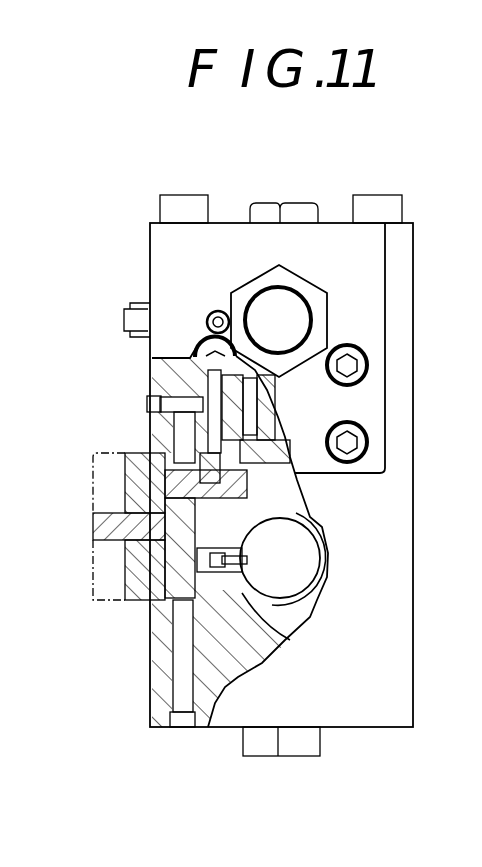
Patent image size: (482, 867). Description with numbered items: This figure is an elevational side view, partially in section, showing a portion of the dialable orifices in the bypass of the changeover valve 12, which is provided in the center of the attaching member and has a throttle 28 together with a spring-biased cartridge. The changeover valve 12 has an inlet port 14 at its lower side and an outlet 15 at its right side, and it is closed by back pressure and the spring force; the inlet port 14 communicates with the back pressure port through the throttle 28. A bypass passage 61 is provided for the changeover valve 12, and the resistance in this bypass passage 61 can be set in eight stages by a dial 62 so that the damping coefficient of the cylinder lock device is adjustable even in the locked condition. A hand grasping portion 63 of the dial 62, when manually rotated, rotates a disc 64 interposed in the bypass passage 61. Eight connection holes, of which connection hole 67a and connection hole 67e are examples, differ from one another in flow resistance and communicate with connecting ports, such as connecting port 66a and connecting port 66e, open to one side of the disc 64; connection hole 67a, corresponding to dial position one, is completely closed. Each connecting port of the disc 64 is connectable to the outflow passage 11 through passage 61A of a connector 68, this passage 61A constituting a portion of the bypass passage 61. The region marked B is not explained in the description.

The outflow passage 11 is at (333, 562).
The changeover valve 12 is at (268, 431).
The inlet port 14 is at (285, 473).
The outlet 15 is at (222, 410).
The throttle 28 is at (285, 500).
The bypass passage 61 is at (152, 428).
The passage 61A is at (278, 647).
The dial 62 is at (90, 476).
The hand grasping portion 63 is at (92, 582).
The disc 64 is at (150, 462).
The connecting port 66a is at (200, 566).
The connecting port 66e is at (302, 568).
The connection hole 67a is at (195, 575).
The connection hole 67e is at (292, 508).
The connector 68 is at (198, 575).
The bolt portion B is at (158, 632).